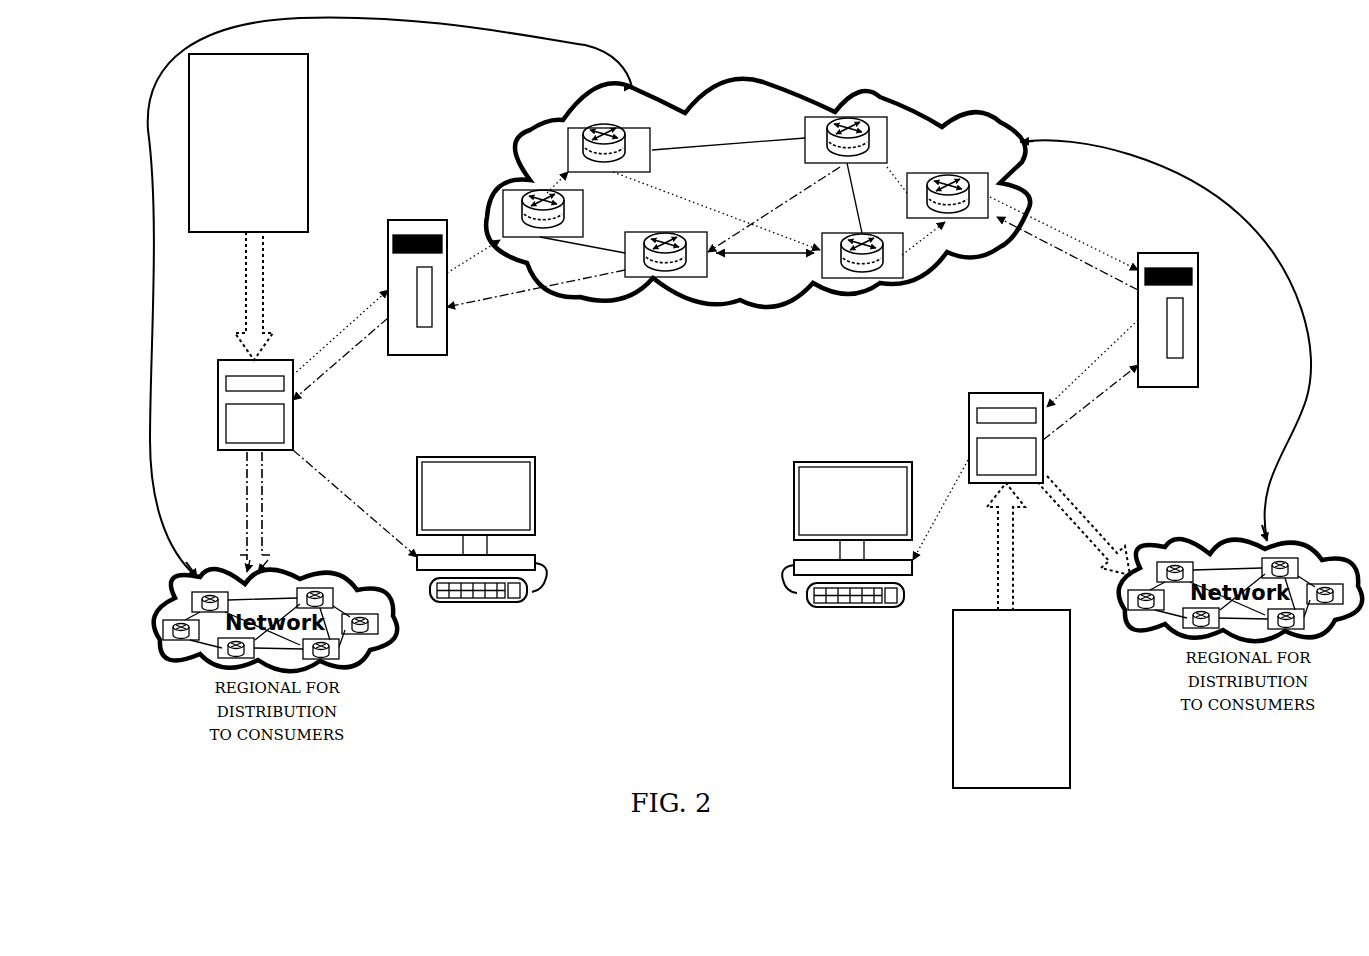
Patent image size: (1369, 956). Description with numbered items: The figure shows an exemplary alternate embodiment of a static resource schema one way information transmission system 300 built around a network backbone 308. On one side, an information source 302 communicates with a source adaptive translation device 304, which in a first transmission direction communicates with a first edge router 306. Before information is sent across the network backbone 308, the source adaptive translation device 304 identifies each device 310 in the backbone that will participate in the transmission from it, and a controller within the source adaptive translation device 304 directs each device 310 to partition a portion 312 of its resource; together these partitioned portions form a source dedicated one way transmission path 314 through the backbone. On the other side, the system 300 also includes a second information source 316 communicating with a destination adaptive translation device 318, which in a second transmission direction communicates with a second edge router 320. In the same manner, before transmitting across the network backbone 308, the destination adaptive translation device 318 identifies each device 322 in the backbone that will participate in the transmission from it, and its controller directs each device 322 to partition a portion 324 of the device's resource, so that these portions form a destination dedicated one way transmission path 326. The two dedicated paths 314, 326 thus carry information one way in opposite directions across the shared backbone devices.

The static resource schema one way information transmission system 300 is at (908, 82).
The information source 302 is at (309, 141).
The source adaptive translation device 304 is at (275, 360).
The first edge router 306 is at (437, 355).
The network backbone 308 is at (598, 92).
The device 310 is at (613, 133).
The portion 312 is at (586, 158).
The source dedicated one way transmission path 314 is at (473, 250).
The second information source 316 is at (953, 672).
The destination adaptive translation device 318 is at (975, 393).
The second edge router 320 is at (1158, 388).
The device 322 is at (822, 120).
The portion 324 is at (825, 150).
The destination dedicated one way transmission path 326 is at (508, 300).